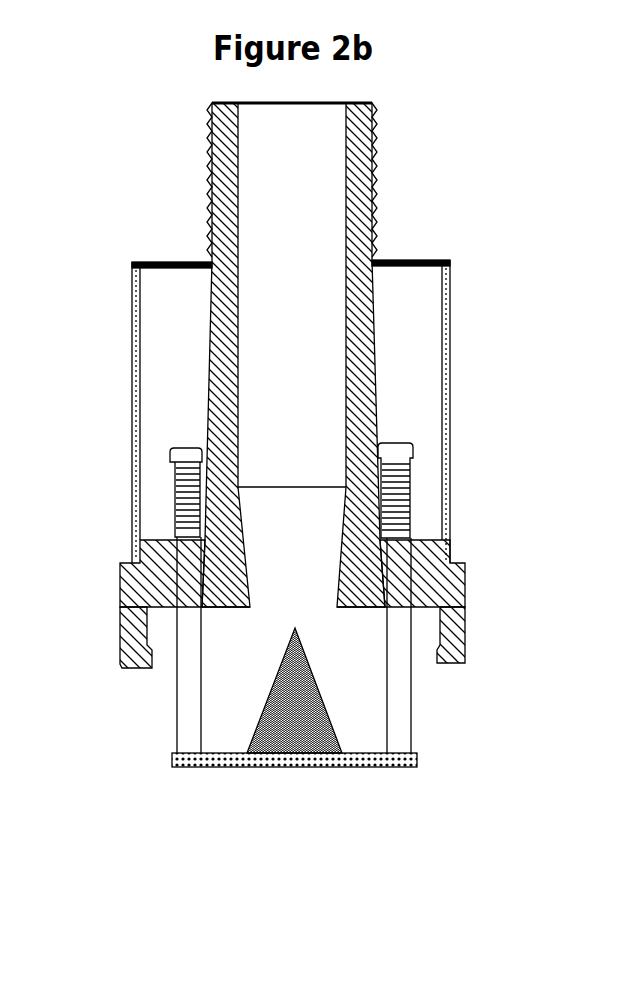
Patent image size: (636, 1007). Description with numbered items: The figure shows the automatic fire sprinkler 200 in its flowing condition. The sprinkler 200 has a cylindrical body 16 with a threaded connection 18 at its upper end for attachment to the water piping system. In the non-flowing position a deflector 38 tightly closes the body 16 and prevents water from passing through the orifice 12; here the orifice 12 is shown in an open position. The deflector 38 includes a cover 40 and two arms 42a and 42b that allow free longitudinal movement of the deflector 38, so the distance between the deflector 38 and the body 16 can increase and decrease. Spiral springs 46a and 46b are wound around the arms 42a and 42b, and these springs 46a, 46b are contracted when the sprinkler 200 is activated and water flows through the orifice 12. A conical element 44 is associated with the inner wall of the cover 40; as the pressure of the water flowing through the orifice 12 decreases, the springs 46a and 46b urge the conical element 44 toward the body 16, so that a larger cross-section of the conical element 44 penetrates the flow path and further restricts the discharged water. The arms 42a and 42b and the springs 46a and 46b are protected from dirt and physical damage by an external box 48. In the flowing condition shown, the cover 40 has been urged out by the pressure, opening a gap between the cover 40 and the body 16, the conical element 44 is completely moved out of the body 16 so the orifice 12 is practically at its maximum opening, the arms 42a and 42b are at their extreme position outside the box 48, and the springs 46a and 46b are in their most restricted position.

The sprinkler 200 is at (487, 187).
The threaded connection 18 is at (212, 183).
The cylindrical body 16 is at (378, 345).
The external box 48 is at (417, 403).
The spiral spring 46a is at (173, 490).
The spiral spring 46b is at (410, 502).
The arm 42a is at (187, 697).
The arm 42b is at (403, 723).
The orifice 12 is at (297, 595).
The conical element 44 is at (243, 770).
The cover 40 is at (352, 762).
The deflector 38 is at (312, 778).